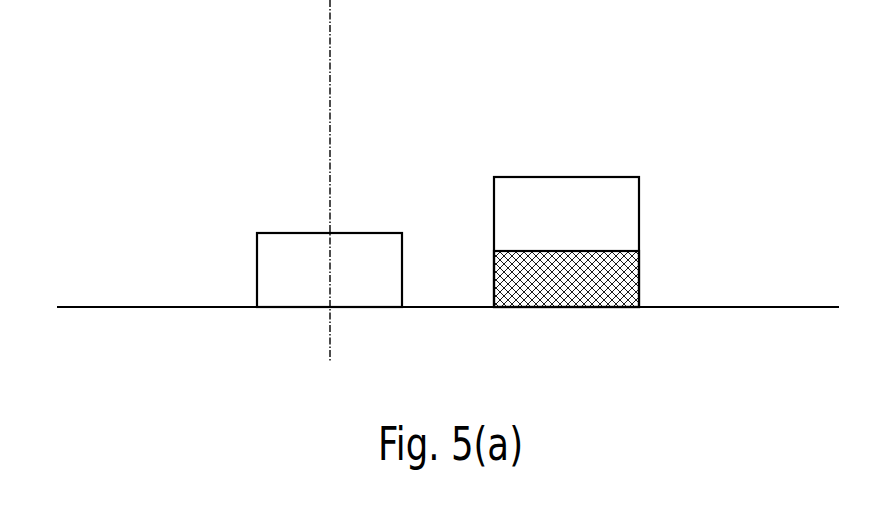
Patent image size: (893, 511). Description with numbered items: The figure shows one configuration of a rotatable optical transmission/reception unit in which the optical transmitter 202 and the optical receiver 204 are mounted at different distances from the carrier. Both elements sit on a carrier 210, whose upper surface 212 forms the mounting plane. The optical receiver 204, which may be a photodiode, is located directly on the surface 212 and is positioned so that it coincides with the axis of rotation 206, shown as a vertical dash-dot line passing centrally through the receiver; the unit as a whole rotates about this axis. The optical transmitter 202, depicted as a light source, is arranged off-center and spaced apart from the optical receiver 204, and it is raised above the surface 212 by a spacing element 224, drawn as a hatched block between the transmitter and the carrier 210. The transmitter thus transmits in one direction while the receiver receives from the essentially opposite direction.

The optical transmitter 202 is at (562, 176).
The optical receiver 204 is at (257, 272).
The axis of rotation 206 is at (329, 52).
The carrier 210 is at (112, 308).
The surface 212 is at (746, 298).
The spacing element 224 is at (640, 278).